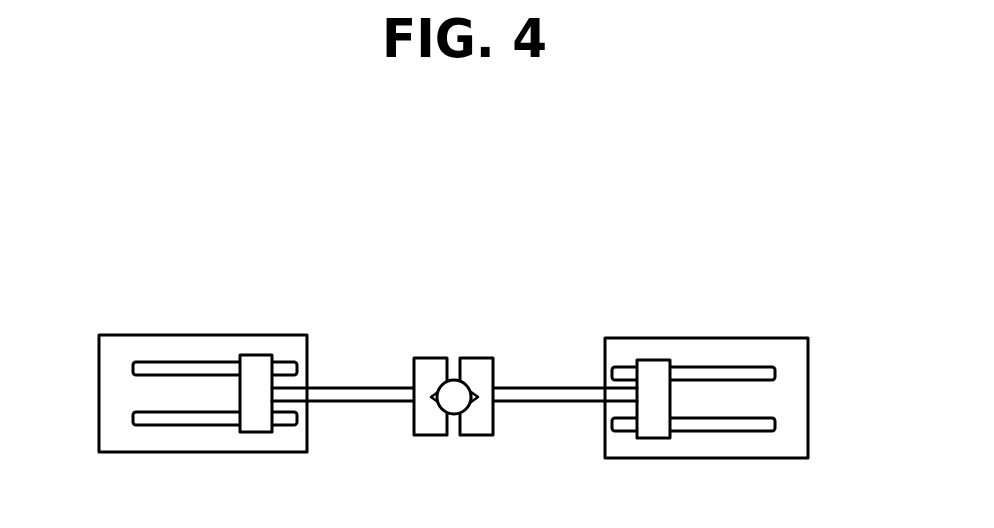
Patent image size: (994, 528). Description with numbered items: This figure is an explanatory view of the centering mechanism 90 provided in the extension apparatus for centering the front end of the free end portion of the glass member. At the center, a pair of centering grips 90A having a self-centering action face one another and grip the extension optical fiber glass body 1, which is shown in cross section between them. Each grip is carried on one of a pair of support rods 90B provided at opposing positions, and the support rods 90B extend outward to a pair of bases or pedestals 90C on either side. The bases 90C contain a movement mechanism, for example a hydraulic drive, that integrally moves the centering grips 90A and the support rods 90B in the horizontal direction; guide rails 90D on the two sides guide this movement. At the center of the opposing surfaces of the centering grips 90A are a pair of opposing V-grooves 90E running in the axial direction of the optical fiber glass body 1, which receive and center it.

The centering mechanism 90 is at (525, 223).
The centering grips 90A is at (436, 360).
The support rods 90B is at (352, 388).
The bases (pedestals) 90C is at (221, 348).
The guide rails 90D is at (159, 362).
The V-grooves 90E is at (442, 415).
The extension optical fiber glass body 1 is at (455, 382).